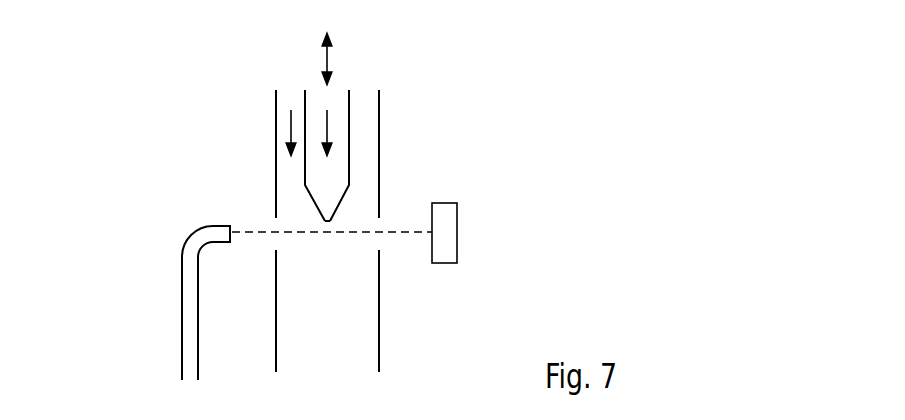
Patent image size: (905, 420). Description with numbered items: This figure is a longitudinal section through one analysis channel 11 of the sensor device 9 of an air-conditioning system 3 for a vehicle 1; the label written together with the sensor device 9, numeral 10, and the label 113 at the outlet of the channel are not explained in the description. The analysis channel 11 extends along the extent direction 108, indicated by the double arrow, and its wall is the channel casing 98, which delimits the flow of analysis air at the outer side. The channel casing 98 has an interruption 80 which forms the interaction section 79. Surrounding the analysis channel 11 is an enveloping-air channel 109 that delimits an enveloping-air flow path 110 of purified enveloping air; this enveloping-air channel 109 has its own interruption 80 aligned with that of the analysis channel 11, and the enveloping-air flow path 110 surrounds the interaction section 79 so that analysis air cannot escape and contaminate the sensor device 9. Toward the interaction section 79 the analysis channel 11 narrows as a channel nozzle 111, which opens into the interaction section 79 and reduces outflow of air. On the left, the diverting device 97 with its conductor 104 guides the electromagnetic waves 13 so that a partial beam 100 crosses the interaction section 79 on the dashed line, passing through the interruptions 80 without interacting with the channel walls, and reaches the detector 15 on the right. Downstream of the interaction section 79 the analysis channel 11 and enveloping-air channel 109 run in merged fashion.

The vehicle 1 is at (524, 126).
The air-conditioning system 3 is at (520, 178).
The sensor device 9 is at (179, 206).
The channel 10 is at (184, 126).
The analysis channel 11 is at (351, 130).
The electromagnetic waves 13 is at (374, 269).
The detector 15 is at (448, 232).
The interaction section 79 is at (267, 222).
The interruption 80 is at (331, 226).
The diverting device 97 is at (165, 307).
The channel casing 98 is at (352, 163).
The partial beam 100 is at (397, 233).
The conductor 104 is at (181, 355).
The extent direction 108 is at (331, 59).
The enveloping-air channel 109 is at (381, 101).
The enveloping-air flow path 110 is at (275, 122).
The channel nozzle 111 is at (311, 203).
The outlet 113 is at (327, 223).